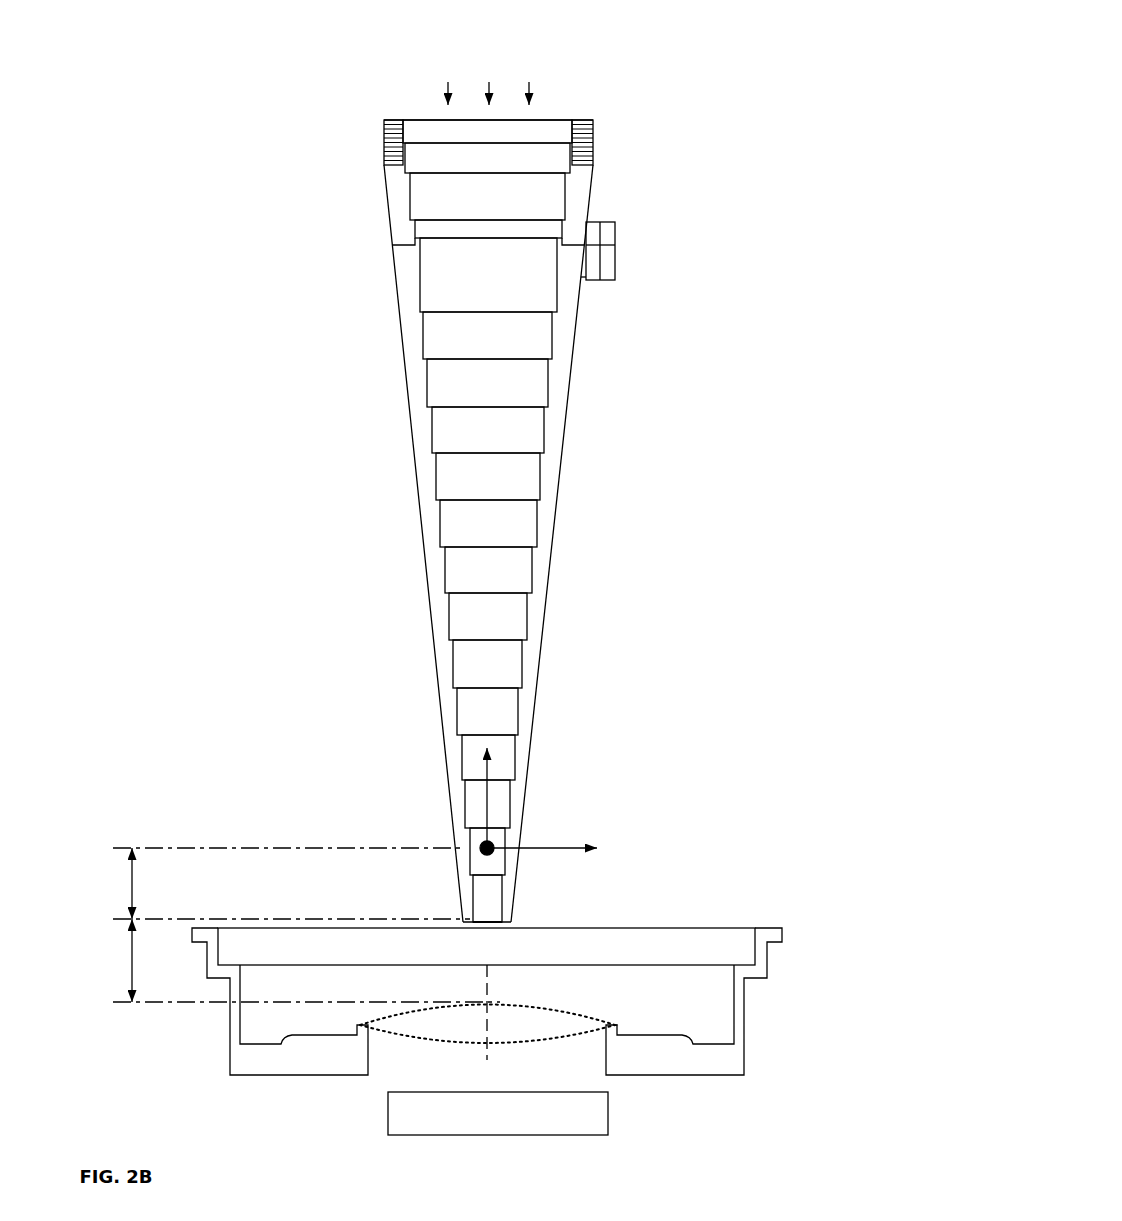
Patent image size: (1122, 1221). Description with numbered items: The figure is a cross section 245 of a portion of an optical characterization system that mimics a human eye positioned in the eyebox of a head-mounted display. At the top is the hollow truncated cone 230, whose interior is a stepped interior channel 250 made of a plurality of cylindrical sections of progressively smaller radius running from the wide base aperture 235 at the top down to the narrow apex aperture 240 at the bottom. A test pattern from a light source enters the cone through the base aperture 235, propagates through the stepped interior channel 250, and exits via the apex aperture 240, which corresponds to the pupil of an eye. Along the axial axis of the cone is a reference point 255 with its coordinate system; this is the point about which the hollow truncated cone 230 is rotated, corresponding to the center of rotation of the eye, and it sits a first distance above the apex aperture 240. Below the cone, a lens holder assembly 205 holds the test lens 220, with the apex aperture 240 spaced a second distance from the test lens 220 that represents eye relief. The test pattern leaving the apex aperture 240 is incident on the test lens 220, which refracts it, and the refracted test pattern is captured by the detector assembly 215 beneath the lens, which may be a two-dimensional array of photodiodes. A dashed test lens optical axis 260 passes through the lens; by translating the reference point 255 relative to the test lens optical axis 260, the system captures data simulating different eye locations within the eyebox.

The cross section 245 is at (478, 623).
The hollow truncated cone 230 is at (338, 919).
The base aperture 235 is at (497, 122).
The stepped interior channel 250 is at (488, 503).
The reference point 255 is at (491, 845).
The apex aperture 240 is at (505, 920).
The test lens 220 is at (588, 1012).
The lens holder assembly 205 is at (278, 1062).
The test lens optical axis 260 is at (487, 1058).
The detector assembly 215 is at (537, 1122).